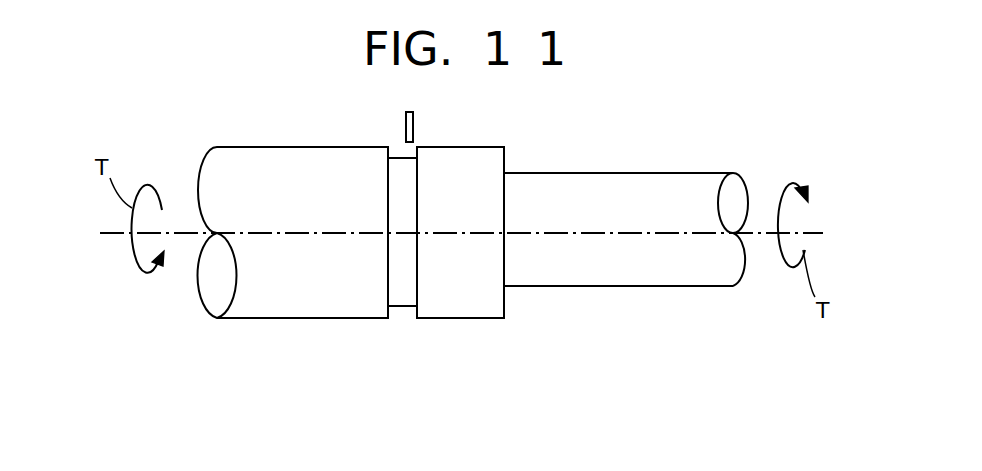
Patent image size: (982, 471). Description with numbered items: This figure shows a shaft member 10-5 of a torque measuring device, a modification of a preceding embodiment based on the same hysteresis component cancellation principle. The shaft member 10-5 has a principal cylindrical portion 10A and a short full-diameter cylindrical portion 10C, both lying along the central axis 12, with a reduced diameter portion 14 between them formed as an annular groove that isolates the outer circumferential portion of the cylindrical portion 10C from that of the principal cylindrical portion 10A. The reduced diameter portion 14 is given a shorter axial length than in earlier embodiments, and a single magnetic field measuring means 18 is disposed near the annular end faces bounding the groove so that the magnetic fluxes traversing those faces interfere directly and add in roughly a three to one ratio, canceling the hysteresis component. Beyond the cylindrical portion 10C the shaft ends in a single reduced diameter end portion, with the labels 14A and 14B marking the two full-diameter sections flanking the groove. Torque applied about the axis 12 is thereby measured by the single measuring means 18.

The shaft member 10-5 is at (461, 237).
The central axis 12 is at (628, 233).
The first rotating member 14A is at (292, 266).
The second rotating member 14B is at (460, 266).
The reduced diameter portion 14 is at (404, 306).
The principal cylindrical portion 10A is at (305, 318).
The cylindrical portion 10C is at (463, 318).
The magnetic field measuring means 18 is at (406, 121).